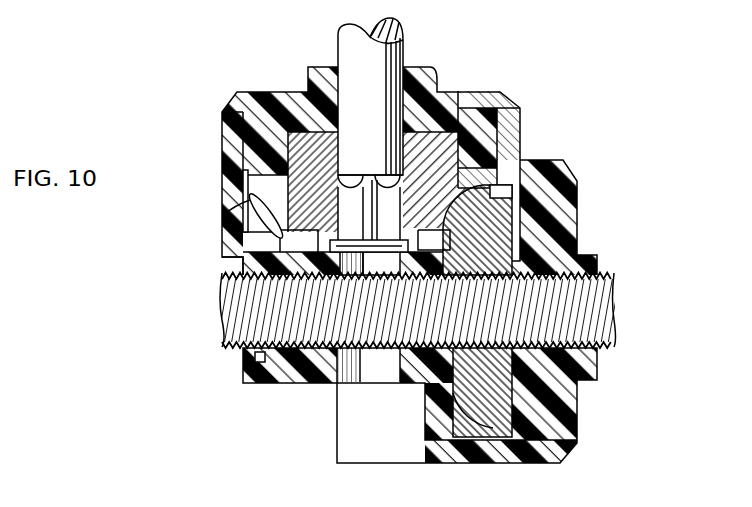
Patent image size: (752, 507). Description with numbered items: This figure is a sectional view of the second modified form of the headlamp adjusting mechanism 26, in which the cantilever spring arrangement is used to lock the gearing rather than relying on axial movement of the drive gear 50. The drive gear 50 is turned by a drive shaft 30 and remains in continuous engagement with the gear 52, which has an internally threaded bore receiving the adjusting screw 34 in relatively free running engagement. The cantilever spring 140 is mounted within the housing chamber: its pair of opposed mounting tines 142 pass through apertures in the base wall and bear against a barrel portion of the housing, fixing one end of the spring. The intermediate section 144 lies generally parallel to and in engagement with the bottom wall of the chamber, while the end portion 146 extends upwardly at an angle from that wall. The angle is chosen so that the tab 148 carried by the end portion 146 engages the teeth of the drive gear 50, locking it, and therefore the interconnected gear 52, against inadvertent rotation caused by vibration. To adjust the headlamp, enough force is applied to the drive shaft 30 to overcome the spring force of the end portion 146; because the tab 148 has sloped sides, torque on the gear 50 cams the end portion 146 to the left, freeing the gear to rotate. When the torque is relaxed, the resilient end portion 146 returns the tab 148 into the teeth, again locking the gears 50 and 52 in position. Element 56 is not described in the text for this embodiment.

The adjusting mechanism 26 is at (612, 185).
The drive shaft 30 is at (483, 11).
The adjusting screw 34 is at (603, 310).
The drive gear 50 is at (480, 93).
The gear 52 is at (512, 228).
The detent seat block 56 is at (512, 241).
The cantilever spring 140 is at (222, 262).
The mounting tines 142 is at (250, 376).
The intermediate section 144 is at (222, 241).
The end portion 146 is at (222, 204).
The tab 148 is at (220, 167).